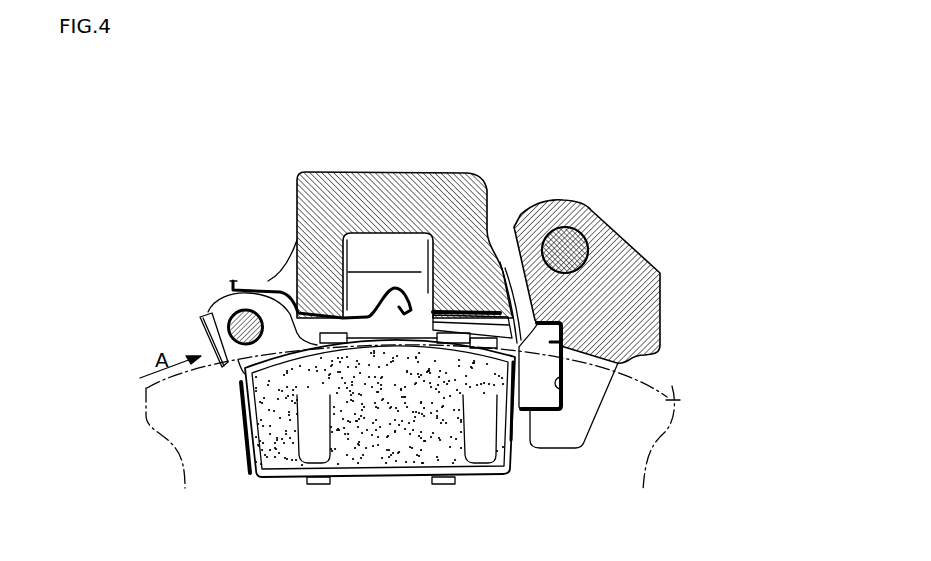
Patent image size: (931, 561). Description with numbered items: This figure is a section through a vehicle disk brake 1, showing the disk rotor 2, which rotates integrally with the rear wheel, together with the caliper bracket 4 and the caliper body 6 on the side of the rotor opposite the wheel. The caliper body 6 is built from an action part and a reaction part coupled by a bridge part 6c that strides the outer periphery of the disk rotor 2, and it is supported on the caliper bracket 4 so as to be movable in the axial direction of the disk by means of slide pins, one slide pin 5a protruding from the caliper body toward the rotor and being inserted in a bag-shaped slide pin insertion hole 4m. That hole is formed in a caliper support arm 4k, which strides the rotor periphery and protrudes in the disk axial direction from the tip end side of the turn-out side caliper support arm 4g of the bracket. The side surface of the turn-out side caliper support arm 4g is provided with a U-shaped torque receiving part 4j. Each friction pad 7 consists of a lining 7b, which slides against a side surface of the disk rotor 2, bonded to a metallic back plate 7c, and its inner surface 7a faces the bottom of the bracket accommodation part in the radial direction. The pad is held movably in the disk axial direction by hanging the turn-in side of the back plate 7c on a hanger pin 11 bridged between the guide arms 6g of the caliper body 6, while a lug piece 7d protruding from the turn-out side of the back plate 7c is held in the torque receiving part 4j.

The vehicle disk brake 1 is at (404, 99).
The disk rotor 2 is at (672, 386).
The caliper bracket 4 is at (667, 285).
The turn-out side caliper support arm 4g is at (590, 415).
The torque receiving part 4j is at (557, 380).
The caliper support arm 4k is at (606, 223).
The slide pin insertion hole 4m is at (583, 231).
The slide pin 5a is at (560, 227).
The caliper body 6 is at (440, 168).
The bridge part 6c is at (368, 181).
The guide arm 6g is at (264, 281).
The friction pad 7 is at (397, 520).
The inner surface 7a is at (463, 478).
The lining 7b is at (362, 458).
The back plate 7c is at (377, 475).
The lug piece 7d is at (543, 398).
The hanger pin 11 is at (227, 317).